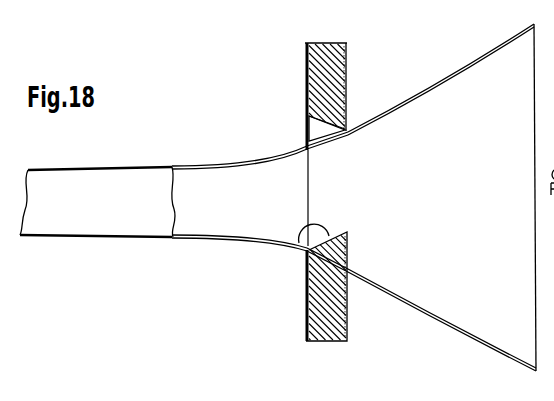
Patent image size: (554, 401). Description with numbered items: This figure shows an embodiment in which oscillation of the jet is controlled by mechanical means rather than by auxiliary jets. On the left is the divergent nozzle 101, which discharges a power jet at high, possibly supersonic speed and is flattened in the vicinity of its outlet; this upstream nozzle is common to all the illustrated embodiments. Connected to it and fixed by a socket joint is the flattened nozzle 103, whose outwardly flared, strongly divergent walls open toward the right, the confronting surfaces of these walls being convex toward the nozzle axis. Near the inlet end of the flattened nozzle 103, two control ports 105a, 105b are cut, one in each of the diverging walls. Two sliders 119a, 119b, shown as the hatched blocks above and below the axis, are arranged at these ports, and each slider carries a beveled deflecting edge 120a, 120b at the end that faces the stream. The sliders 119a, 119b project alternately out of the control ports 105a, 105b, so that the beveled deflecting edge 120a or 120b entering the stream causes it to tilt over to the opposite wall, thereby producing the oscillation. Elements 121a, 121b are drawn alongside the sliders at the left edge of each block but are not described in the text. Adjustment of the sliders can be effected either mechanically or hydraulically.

The divergent nozzle 101 is at (75, 187).
The flattened nozzle 103 is at (439, 110).
The control port 105a is at (333, 143).
The control port 105b is at (349, 268).
The slider 119a is at (318, 58).
The slider 119b is at (325, 328).
The beveled deflecting edge 120a is at (308, 135).
The beveled deflecting edge 120b is at (306, 254).
The upper plate 121a is at (306, 102).
The lower plate 121b is at (306, 287).